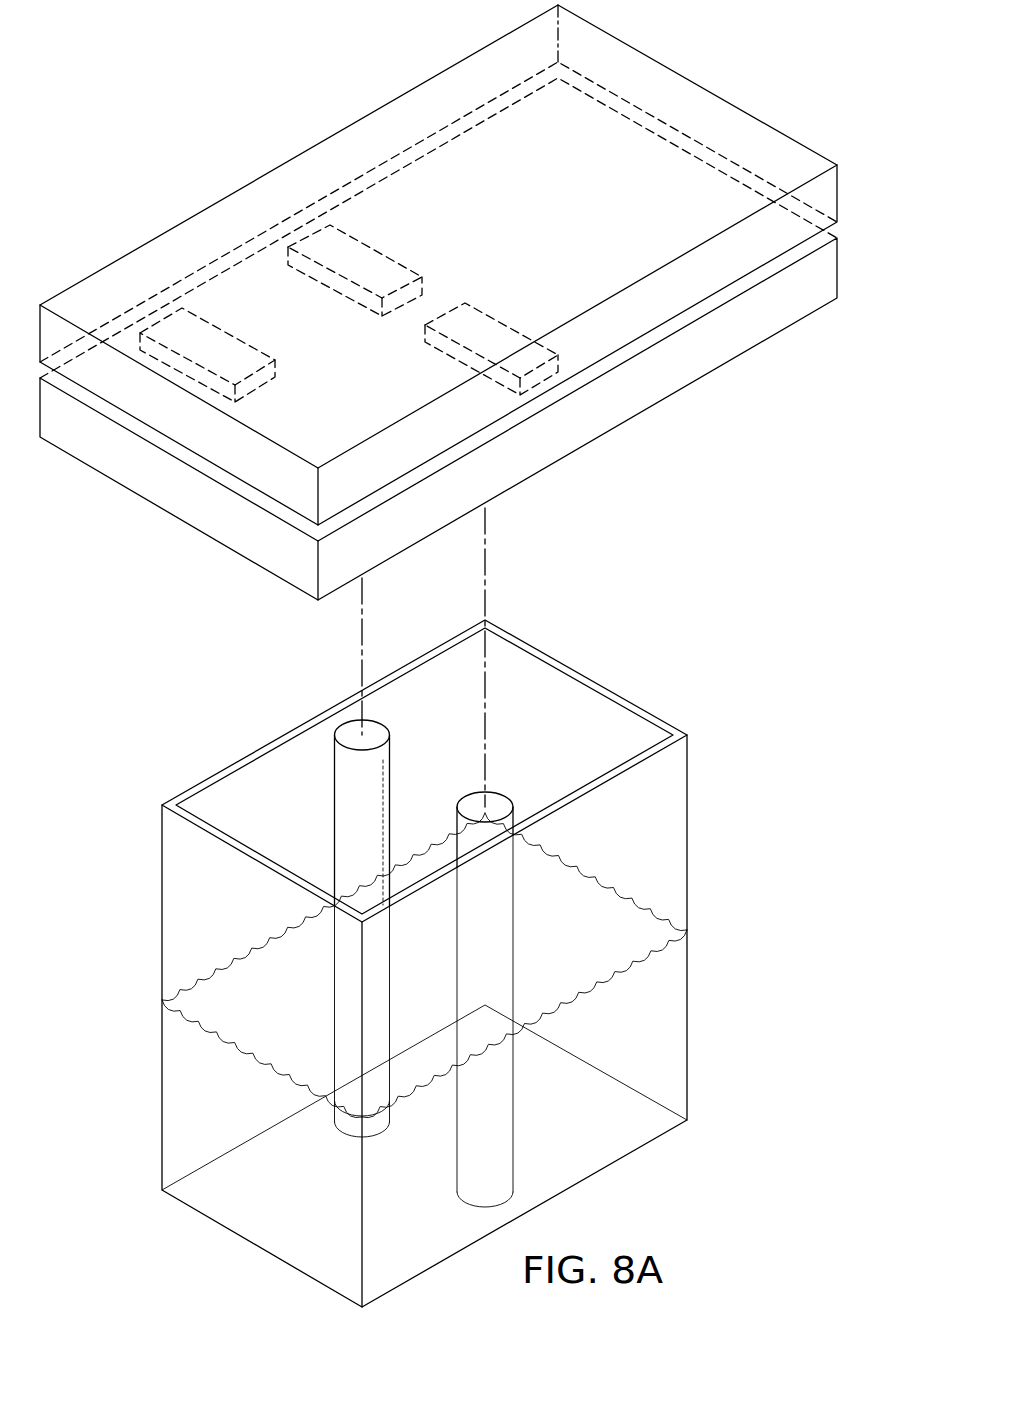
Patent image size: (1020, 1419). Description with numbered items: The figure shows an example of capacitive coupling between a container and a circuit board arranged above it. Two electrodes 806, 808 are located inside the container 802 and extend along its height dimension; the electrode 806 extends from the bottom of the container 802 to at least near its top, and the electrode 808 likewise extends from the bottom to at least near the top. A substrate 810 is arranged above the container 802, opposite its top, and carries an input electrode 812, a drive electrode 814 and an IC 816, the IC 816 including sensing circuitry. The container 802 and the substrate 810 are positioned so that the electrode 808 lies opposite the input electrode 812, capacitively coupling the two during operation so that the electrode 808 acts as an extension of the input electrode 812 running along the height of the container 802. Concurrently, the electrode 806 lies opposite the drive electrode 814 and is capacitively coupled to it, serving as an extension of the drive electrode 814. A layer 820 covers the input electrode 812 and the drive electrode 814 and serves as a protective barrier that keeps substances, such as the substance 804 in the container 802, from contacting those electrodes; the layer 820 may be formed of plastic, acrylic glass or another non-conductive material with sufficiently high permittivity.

The container 802 is at (603, 650).
The substance 804 is at (608, 897).
The electrode 806 is at (335, 820).
The electrode 808 is at (497, 800).
The substrate 810 is at (695, 93).
The input electrode 812 is at (508, 323).
The drive electrode 814 is at (393, 257).
The IC 816 is at (275, 373).
The layer 820 is at (165, 498).